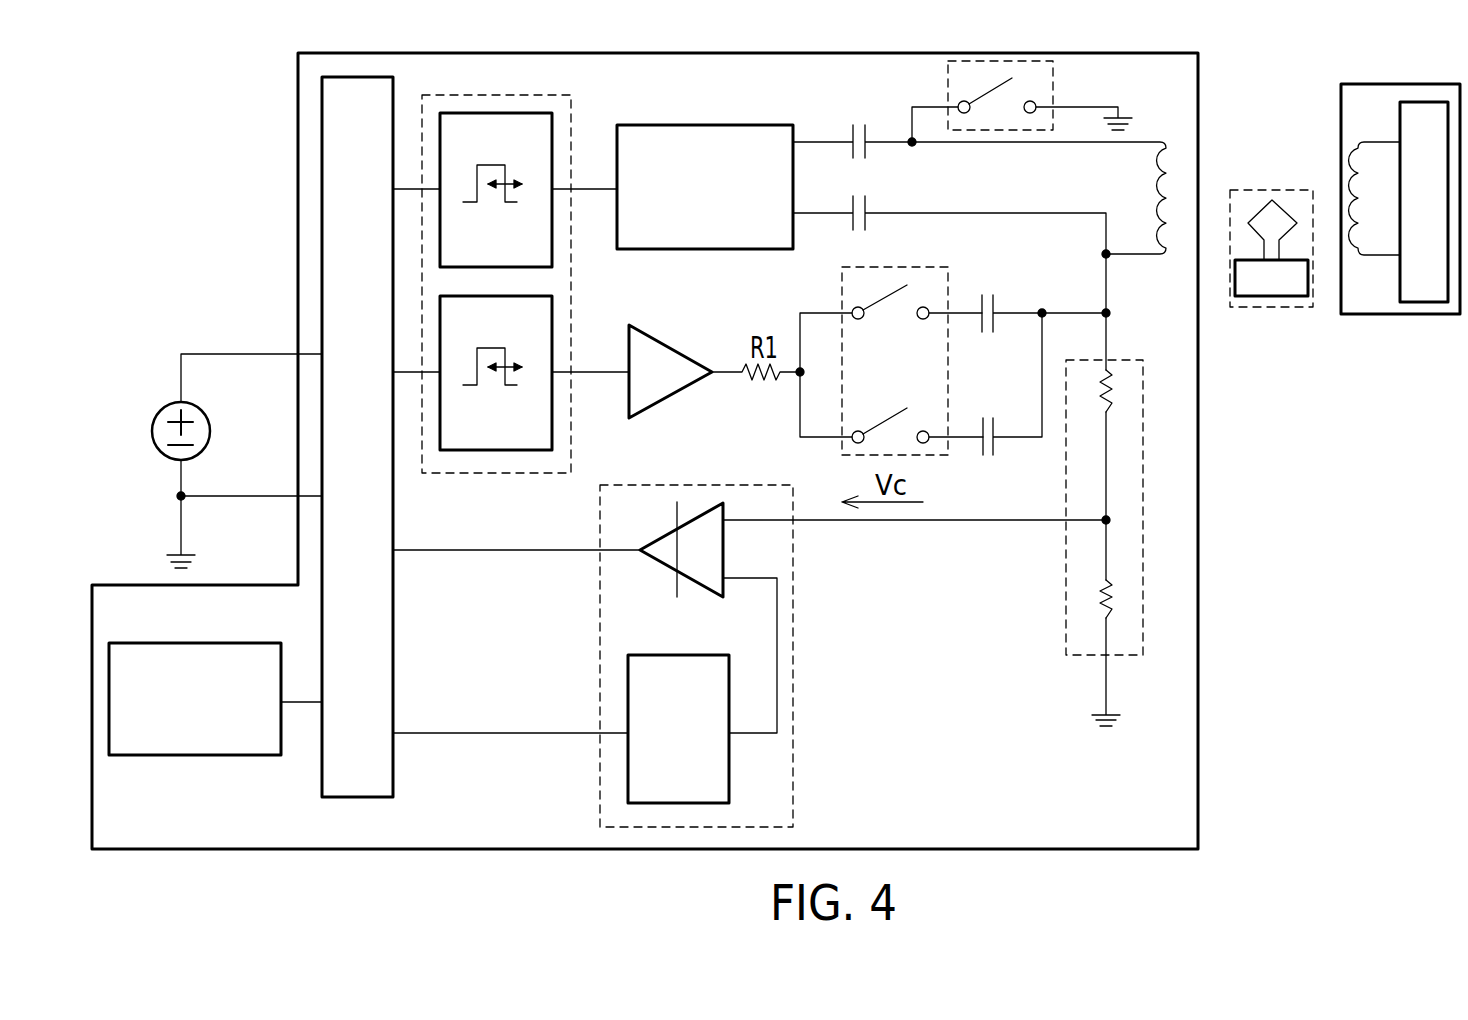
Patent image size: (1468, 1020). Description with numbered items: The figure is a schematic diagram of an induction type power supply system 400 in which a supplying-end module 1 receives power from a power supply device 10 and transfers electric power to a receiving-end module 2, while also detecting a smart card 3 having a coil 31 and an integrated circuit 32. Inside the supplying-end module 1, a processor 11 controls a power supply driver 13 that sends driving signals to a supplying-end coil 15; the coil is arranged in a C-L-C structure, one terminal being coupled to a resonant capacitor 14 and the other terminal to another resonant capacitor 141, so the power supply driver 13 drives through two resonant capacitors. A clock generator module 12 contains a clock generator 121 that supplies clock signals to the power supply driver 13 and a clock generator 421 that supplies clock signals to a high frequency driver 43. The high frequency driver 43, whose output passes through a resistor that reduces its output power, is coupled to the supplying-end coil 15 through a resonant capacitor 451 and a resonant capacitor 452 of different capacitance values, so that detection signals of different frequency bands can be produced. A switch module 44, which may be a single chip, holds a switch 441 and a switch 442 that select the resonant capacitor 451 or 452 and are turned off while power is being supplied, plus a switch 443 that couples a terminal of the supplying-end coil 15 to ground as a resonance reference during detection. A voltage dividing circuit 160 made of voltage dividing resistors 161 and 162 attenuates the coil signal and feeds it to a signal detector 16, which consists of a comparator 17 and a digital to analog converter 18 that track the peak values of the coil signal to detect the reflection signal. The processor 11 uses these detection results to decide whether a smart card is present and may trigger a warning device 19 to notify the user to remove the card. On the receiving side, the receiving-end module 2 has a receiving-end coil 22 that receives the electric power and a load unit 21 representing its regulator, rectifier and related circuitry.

The induction type power supply system 400 is at (186, 103).
The supplying-end module 1 is at (298, 140).
The processor 11 is at (355, 77).
The clock generator module 12 is at (571, 120).
The clock generator 121 is at (552, 228).
The clock generator 421 is at (552, 358).
The power supply driver 13 is at (722, 124).
The resonant capacitor 141 is at (862, 125).
The resonant capacitor 14 is at (862, 197).
The supplying-end coil 15 is at (1170, 140).
The switch module 44 is at (1018, 57).
The switch 443 is at (1007, 102).
The switch 441 is at (907, 305).
The switch 442 is at (907, 430).
The resonant capacitor 451 is at (993, 295).
The resonant capacitor 452 is at (993, 455).
The high frequency driver 43 is at (660, 340).
The power supply device 10 is at (160, 412).
The signal detector 16 is at (725, 623).
The comparator 17 is at (700, 505).
The digital to analog converter 18 is at (700, 655).
The warning device 19 is at (160, 643).
The voltage dividing circuit 160 is at (1094, 490).
The voltage dividing resistor 161 is at (1112, 392).
The voltage dividing resistor 162 is at (1112, 598).
The smart card 3 is at (1269, 242).
The coil 31 is at (1282, 205).
The integrated circuit 32 is at (1278, 297).
The receiving-end module 2 is at (1385, 241).
The receiving-end coil 22 is at (1373, 140).
The load unit 21 is at (1420, 302).